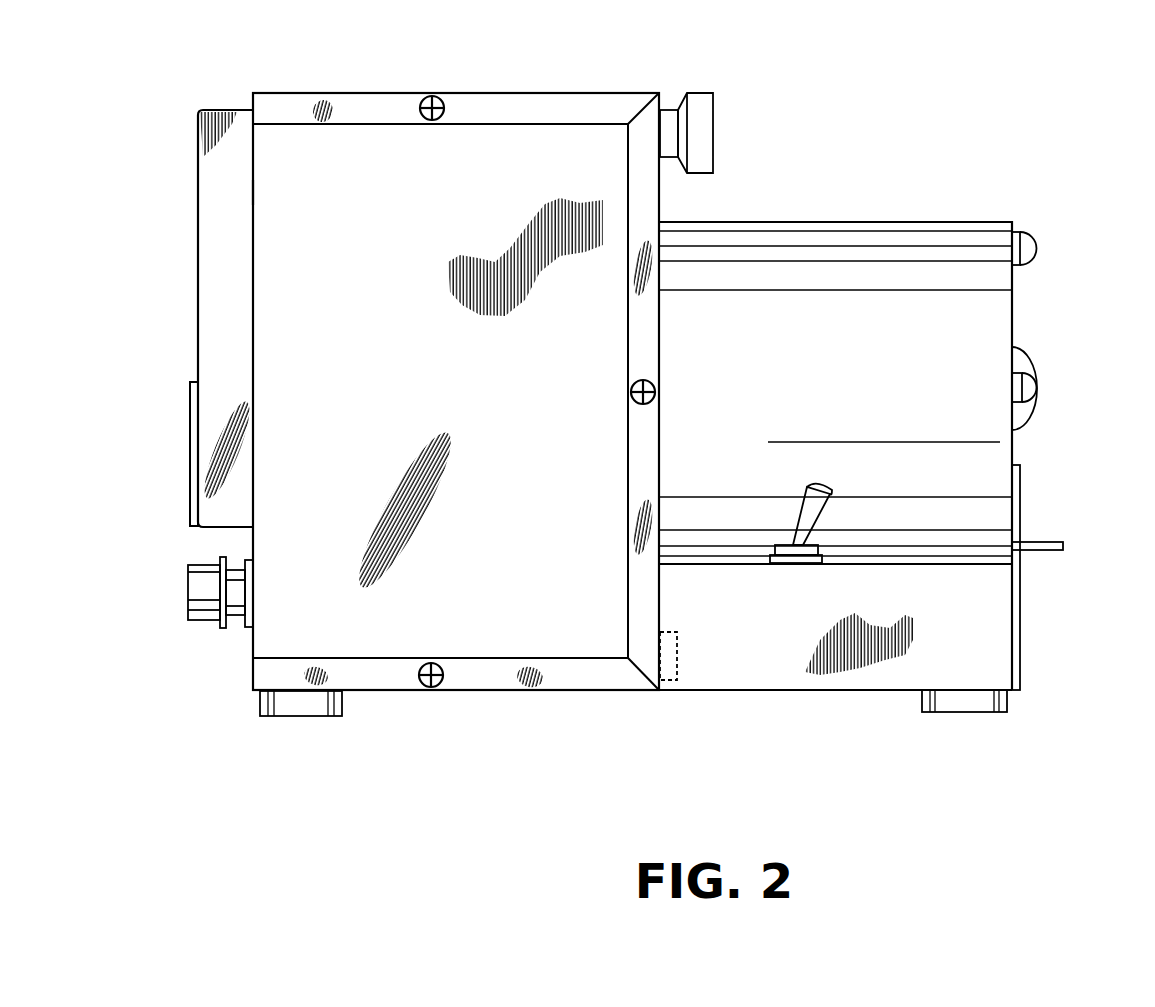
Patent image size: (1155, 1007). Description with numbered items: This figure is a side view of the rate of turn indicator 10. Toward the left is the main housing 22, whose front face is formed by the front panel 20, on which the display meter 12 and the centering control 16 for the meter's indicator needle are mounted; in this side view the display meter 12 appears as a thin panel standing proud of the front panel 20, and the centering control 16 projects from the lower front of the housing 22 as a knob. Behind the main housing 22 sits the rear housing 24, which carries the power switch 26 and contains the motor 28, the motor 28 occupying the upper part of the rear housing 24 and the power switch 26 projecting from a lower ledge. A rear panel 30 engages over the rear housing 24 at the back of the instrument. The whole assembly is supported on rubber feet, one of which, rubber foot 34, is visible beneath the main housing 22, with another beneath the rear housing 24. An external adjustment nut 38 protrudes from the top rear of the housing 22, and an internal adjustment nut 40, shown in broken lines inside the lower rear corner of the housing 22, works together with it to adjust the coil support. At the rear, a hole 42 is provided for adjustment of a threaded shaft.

The rate of turn indicator 10 is at (955, 102).
The display meter 12 is at (212, 332).
The centering control 16 is at (202, 598).
The front panel 20 is at (252, 192).
The housing 22 is at (466, 390).
The rear housing 24 is at (977, 625).
The power switch 26 is at (798, 553).
The motor 28 is at (849, 394).
The rear panel 30 is at (1017, 597).
The rubber foot 34 is at (308, 707).
The external adjustment nut 38 is at (700, 138).
The internal adjustment nut 40 is at (675, 653).
The hole 42 is at (1027, 660).